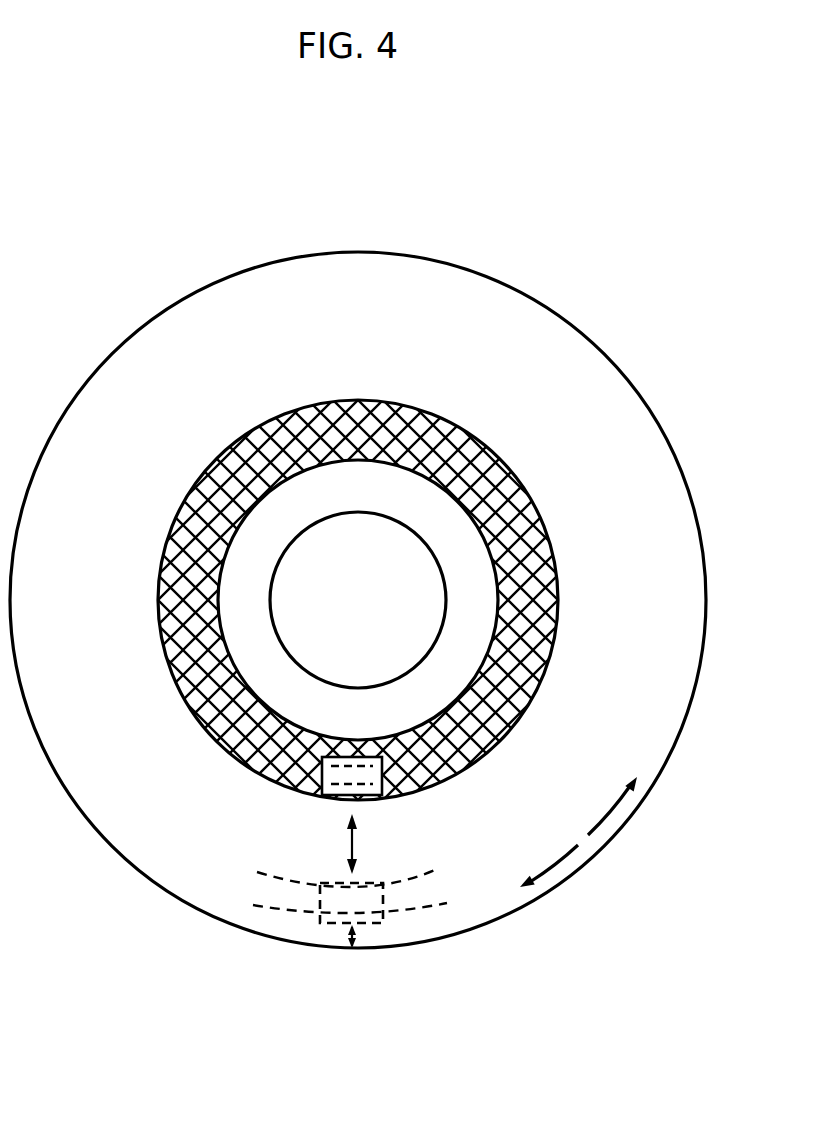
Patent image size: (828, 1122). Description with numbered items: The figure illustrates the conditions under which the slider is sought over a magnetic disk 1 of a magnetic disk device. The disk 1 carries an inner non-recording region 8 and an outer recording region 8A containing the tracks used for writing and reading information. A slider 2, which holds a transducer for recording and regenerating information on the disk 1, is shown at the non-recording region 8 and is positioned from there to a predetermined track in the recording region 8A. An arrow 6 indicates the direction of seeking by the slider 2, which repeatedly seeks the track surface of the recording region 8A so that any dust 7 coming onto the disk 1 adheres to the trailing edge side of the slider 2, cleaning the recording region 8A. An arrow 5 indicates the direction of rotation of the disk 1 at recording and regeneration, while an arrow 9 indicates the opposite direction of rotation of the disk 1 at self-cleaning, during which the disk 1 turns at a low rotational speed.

The magnetic disk 1 is at (562, 342).
The non-recording region 8 is at (540, 508).
The recording region 8A is at (617, 518).
The slider 2 is at (373, 805).
The arrow indicating the direction of seeking by the slider 6 is at (355, 852).
The dust 7 is at (420, 882).
The arrow indicating the direction of rotation of the disk at recording and regenera 5 is at (612, 803).
The arrow indicating the direction of rotation of the disk at self-cleaning 9 is at (552, 860).